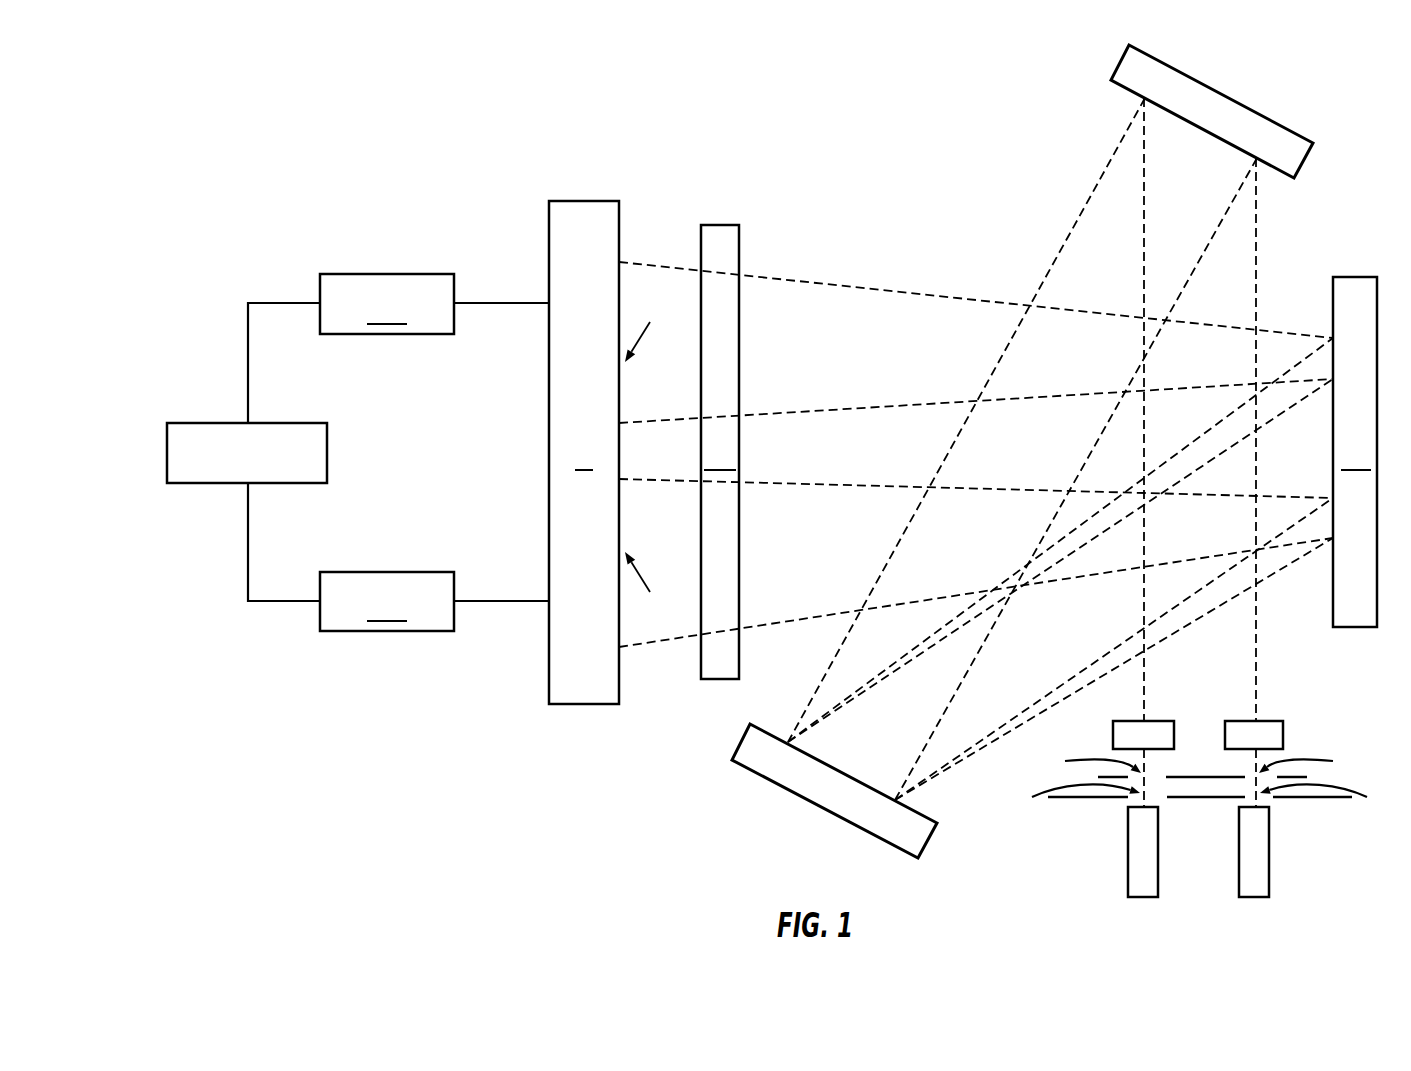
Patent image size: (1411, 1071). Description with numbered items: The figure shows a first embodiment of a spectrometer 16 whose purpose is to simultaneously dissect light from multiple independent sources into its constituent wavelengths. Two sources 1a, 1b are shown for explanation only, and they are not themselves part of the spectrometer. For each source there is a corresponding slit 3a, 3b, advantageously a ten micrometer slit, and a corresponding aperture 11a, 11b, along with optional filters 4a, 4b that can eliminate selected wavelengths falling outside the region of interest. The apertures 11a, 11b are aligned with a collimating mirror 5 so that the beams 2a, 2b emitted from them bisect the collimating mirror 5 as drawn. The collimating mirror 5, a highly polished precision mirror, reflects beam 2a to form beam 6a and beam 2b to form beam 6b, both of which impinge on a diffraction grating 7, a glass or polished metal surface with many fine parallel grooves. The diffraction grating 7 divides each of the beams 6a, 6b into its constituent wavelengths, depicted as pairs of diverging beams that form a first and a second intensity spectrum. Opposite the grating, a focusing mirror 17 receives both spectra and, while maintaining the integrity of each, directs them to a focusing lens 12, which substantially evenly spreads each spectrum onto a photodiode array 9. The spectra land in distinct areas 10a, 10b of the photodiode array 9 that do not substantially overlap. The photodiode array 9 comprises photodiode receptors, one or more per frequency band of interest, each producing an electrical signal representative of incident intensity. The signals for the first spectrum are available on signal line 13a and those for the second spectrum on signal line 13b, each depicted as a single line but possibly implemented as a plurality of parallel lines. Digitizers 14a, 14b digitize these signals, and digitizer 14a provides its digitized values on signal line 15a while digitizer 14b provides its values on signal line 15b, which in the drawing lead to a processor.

The source 1a is at (1113, 852).
The source 1b is at (1288, 852).
The beam 2a is at (1177, 452).
The beam 2b is at (1289, 482).
The slit 3a is at (1101, 797).
The slit 3b is at (1300, 797).
The filter 4a is at (1113, 730).
The filter 4b is at (1287, 728).
The collimating mirror 5 is at (1212, 111).
The beam 6a is at (966, 420).
The beam 6b is at (1076, 479).
The diffraction grating 7 is at (804, 777).
The photodiode array 9 is at (584, 452).
The area 10a is at (661, 327).
The area 10b is at (661, 587).
The aperture 11a is at (1113, 762).
The aperture 11b is at (1290, 762).
The focusing lens 12 is at (720, 452).
The signal line 13a is at (493, 268).
The signal line 13b is at (491, 637).
The digitizer 14a is at (387, 304).
The digitizer 14b is at (387, 601).
The signal line 15a is at (255, 337).
The signal line 15b is at (255, 570).
The spectrometer 16 is at (299, 155).
The focusing mirror 17 is at (1355, 452).